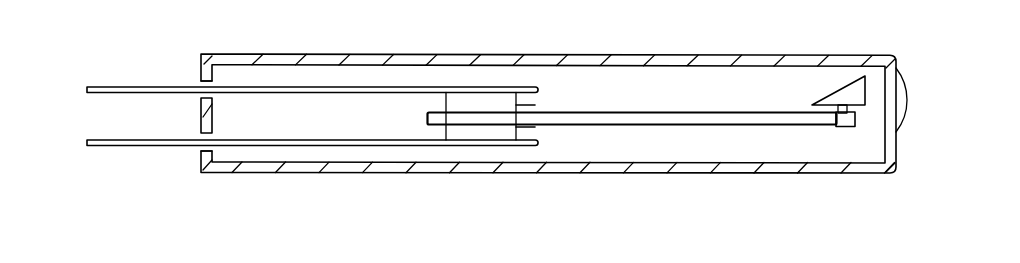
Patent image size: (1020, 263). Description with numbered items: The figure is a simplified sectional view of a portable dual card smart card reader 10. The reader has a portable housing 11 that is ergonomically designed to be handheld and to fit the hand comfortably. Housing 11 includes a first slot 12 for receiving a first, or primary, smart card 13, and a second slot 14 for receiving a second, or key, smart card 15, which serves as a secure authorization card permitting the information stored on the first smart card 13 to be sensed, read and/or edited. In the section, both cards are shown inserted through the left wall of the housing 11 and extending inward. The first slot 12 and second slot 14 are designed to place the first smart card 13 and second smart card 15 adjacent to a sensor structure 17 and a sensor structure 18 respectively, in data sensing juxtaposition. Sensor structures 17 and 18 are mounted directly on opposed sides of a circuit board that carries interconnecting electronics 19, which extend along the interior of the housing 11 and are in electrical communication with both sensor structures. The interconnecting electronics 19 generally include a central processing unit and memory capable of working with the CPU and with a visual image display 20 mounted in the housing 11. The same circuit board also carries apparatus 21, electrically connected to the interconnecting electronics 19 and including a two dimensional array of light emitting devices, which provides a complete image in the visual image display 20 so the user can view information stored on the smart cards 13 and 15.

The portable dual card smart card reader 10 is at (580, 214).
The portable housing 11 is at (710, 54).
The first slot 12 is at (194, 76).
The first smart card 13 is at (101, 86).
The second slot 14 is at (194, 157).
The second smart card 15 is at (102, 147).
The sensor structure 17 is at (535, 105).
The sensor structure 18 is at (535, 127).
The interconnecting electronics 19 is at (702, 112).
The visual image display 20 is at (836, 94).
The apparatus 21 is at (837, 127).